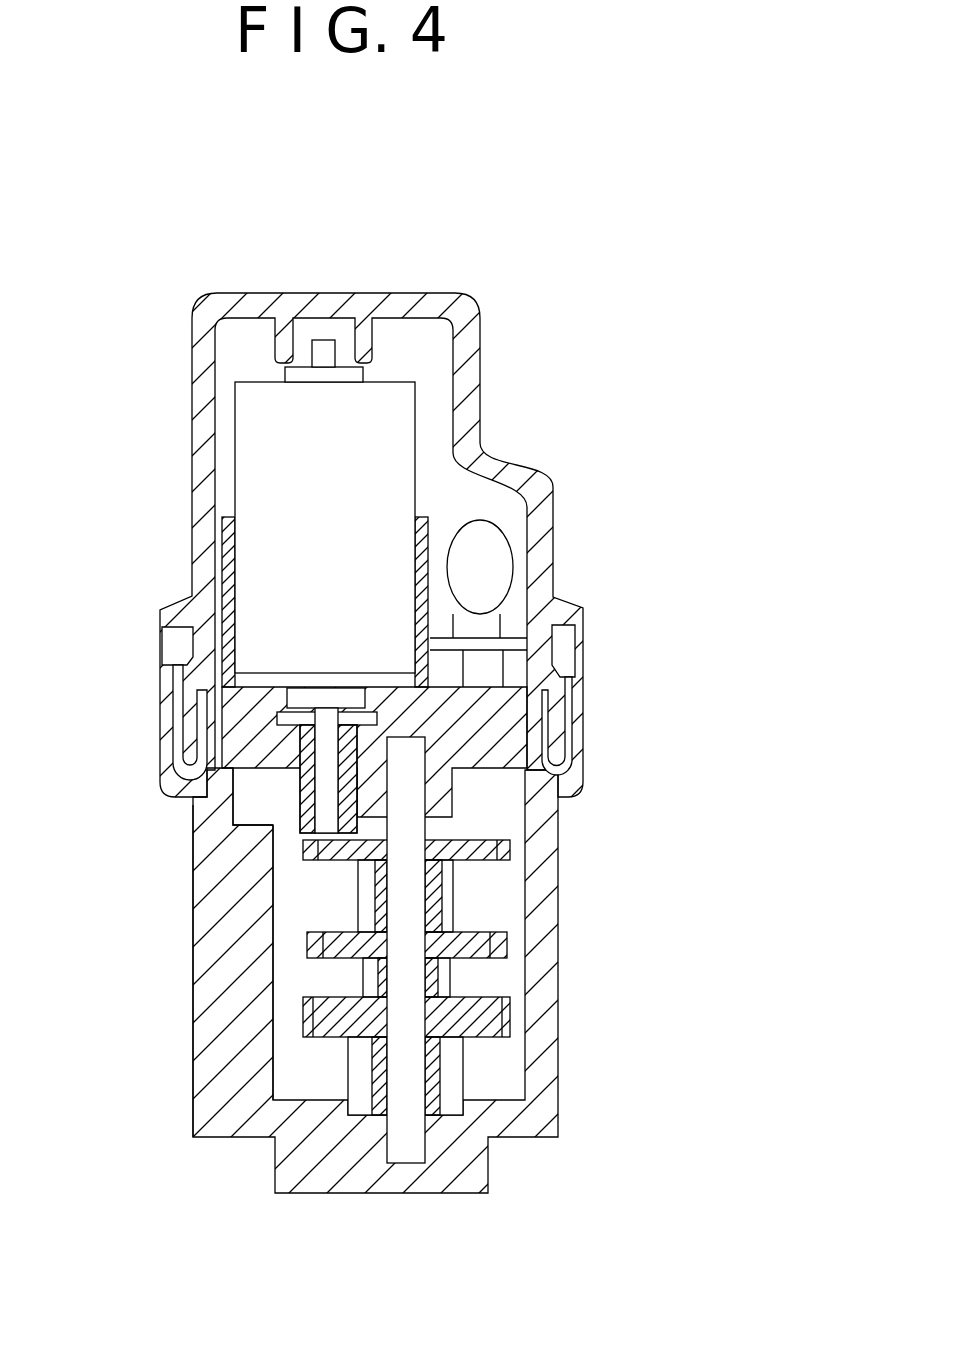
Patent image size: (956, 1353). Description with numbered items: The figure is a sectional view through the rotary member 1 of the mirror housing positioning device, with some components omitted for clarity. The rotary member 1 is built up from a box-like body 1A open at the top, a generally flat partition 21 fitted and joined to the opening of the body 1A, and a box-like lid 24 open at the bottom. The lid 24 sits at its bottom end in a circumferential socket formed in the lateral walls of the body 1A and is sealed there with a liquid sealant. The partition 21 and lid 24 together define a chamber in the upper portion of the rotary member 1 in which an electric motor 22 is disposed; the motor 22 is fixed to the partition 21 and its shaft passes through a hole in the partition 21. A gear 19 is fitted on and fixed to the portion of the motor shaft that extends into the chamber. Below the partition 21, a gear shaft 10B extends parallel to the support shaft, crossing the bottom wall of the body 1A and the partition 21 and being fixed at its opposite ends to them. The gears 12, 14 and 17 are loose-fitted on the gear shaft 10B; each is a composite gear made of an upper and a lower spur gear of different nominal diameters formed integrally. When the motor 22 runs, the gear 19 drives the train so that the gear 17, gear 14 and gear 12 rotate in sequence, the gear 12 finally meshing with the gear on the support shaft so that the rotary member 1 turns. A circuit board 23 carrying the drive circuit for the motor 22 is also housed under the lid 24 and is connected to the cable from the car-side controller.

The rotary member 1 is at (195, 995).
The body 1A is at (208, 912).
The gear shaft 10B is at (410, 1020).
The gear 12 is at (490, 1003).
The gear 14 is at (477, 925).
The gear 17 is at (493, 840).
The gear 19 is at (298, 795).
The partition 21 is at (483, 722).
The electric motor 22 is at (375, 437).
The circuit board 23 is at (488, 550).
The lid 24 is at (468, 308).